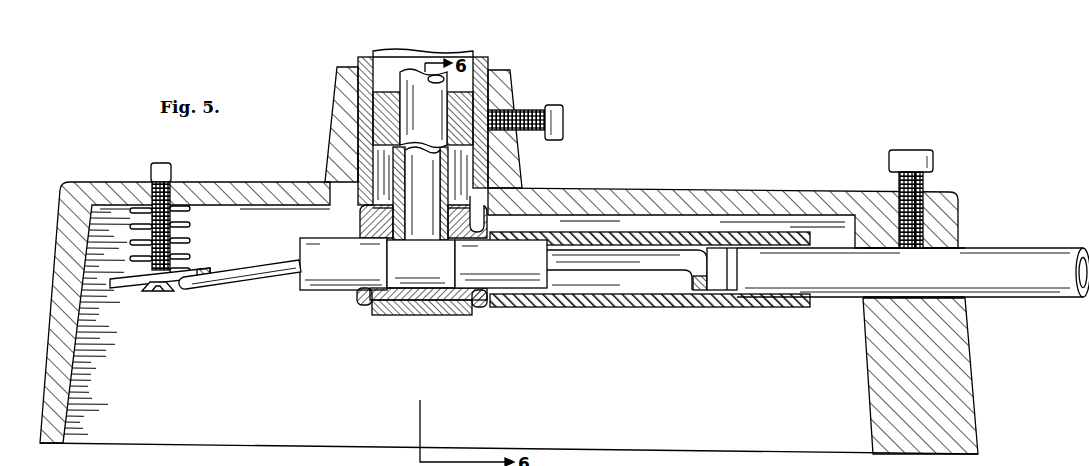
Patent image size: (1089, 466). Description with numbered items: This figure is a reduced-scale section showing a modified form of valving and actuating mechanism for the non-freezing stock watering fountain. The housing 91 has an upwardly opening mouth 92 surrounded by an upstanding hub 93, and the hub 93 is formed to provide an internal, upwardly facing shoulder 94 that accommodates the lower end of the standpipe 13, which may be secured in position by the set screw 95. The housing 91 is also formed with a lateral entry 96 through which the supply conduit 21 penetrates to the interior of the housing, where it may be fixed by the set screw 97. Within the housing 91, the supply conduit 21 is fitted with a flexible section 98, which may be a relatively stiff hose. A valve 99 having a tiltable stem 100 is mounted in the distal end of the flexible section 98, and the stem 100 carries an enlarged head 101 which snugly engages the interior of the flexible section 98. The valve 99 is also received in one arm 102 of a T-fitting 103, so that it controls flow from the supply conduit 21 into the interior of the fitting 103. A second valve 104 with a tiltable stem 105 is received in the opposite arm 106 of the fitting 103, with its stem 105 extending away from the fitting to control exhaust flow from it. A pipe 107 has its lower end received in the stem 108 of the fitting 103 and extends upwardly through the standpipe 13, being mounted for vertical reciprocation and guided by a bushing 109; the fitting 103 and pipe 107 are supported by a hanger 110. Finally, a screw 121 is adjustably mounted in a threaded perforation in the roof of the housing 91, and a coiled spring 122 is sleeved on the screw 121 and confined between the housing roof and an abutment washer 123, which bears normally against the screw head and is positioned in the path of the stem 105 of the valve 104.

The standpipe 13 is at (489, 58).
The supply conduit 21 is at (1025, 248).
The housing 91 is at (963, 333).
The mouth 92 is at (486, 216).
The hub 93 is at (333, 133).
The shoulder 94 is at (356, 172).
The set screw 95 is at (563, 121).
The lateral entry 96 is at (935, 251).
The set screw 97 is at (906, 150).
The flexible section 98 is at (573, 308).
The valve 99 is at (493, 266).
The tiltable stem 100 is at (628, 270).
The enlarged head 101 is at (690, 288).
The arm 102 is at (481, 308).
The T-fitting 103 is at (412, 266).
The second valve 104 is at (326, 266).
The tiltable stem 105 is at (248, 265).
The arm 106 is at (362, 305).
The pipe 107 is at (398, 124).
The stem 108 is at (370, 213).
The bushing 109 is at (483, 100).
The hanger 110 is at (406, 316).
The screw 121 is at (170, 170).
The coiled spring 122 is at (188, 232).
The abutment washer 123 is at (203, 268).